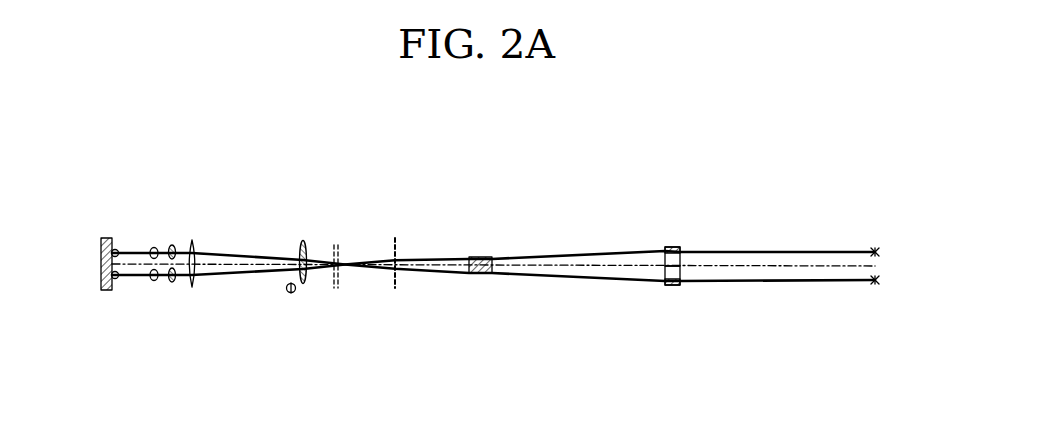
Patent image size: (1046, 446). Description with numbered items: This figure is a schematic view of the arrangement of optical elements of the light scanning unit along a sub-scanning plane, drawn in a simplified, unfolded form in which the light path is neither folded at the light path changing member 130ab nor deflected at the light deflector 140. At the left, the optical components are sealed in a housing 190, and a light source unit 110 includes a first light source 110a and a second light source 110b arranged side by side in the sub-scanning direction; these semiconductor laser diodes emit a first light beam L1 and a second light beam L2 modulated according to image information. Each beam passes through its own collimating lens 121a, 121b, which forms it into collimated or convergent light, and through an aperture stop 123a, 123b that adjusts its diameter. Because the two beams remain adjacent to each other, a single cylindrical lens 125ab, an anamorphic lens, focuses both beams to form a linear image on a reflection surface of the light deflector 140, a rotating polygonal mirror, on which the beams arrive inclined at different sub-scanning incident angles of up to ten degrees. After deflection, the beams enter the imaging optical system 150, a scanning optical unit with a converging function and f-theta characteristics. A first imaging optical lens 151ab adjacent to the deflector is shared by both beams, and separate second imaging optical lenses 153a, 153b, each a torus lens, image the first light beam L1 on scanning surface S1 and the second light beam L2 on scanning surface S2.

The housing 190 is at (102, 240).
The light source unit 110 is at (127, 305).
The first light source 110a is at (116, 249).
The second light source 110b is at (116, 279).
The collimating lens 121a is at (155, 247).
The collimating lens 121b is at (154, 281).
The aperture stop 123a is at (173, 245).
The aperture stop 123b is at (173, 282).
The cylindrical lens 125ab is at (197, 246).
The light path changing member 130ab is at (325, 219).
The light deflector 140 is at (395, 237).
The imaging optical system 150 is at (570, 292).
The first imaging optical lens 151ab is at (480, 275).
The second imaging optical lens 153a is at (671, 301).
The second imaging optical lens 153b is at (668, 246).
The first light beam L1 is at (290, 257).
The second light beam L2 is at (598, 251).
The scanning surface S1 is at (875, 281).
The scanning surface S2 is at (875, 251).